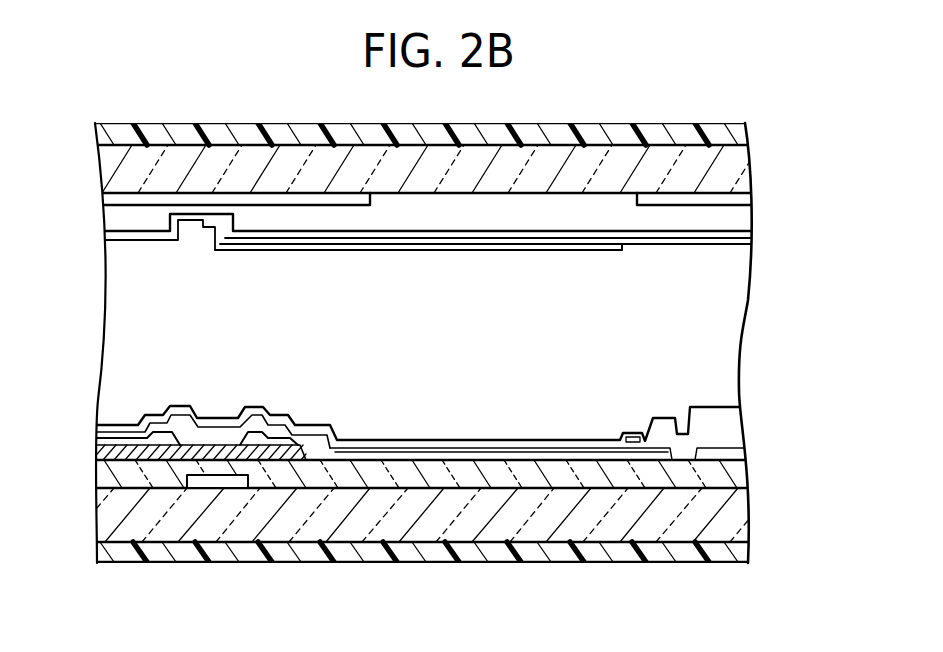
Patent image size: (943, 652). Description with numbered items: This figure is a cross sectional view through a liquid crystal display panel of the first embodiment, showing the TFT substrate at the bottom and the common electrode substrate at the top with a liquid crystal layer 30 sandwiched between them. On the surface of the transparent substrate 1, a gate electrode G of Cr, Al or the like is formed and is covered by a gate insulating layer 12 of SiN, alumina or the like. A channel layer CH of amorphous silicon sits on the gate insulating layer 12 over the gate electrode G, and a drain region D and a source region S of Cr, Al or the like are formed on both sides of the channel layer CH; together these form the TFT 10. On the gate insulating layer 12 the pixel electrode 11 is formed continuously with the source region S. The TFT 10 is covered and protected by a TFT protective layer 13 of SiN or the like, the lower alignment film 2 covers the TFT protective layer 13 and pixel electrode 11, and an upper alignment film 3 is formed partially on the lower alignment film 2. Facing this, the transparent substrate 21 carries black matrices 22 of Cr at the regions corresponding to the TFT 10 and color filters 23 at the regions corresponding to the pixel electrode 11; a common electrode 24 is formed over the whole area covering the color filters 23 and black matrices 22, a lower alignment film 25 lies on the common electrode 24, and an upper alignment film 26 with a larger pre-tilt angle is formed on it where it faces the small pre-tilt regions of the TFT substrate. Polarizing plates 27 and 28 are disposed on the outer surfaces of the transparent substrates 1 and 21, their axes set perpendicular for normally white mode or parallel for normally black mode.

The transparent substrate 1 is at (720, 518).
The lower alignment film 2 is at (737, 412).
The upper alignment film 3 is at (633, 442).
The TFT 10 is at (184, 488).
The pixel electrode 11 is at (458, 461).
The gate insulating layer 12 is at (735, 472).
The TFT protective layer 13 is at (118, 431).
The transparent substrate 21 is at (727, 165).
The black matrices 22 is at (740, 200).
The color filters 23 is at (732, 218).
The common electrode 24 is at (742, 242).
The lower alignment film 25 is at (745, 252).
The upper alignment film 26 is at (608, 250).
The polarizing plate 27 is at (733, 550).
The polarizing plate 28 is at (735, 133).
The liquid crystal layer 30 is at (118, 314).
The channel layer CH is at (178, 458).
The gate electrode G is at (222, 482).
The source region S is at (296, 457).
The drain region D is at (140, 452).